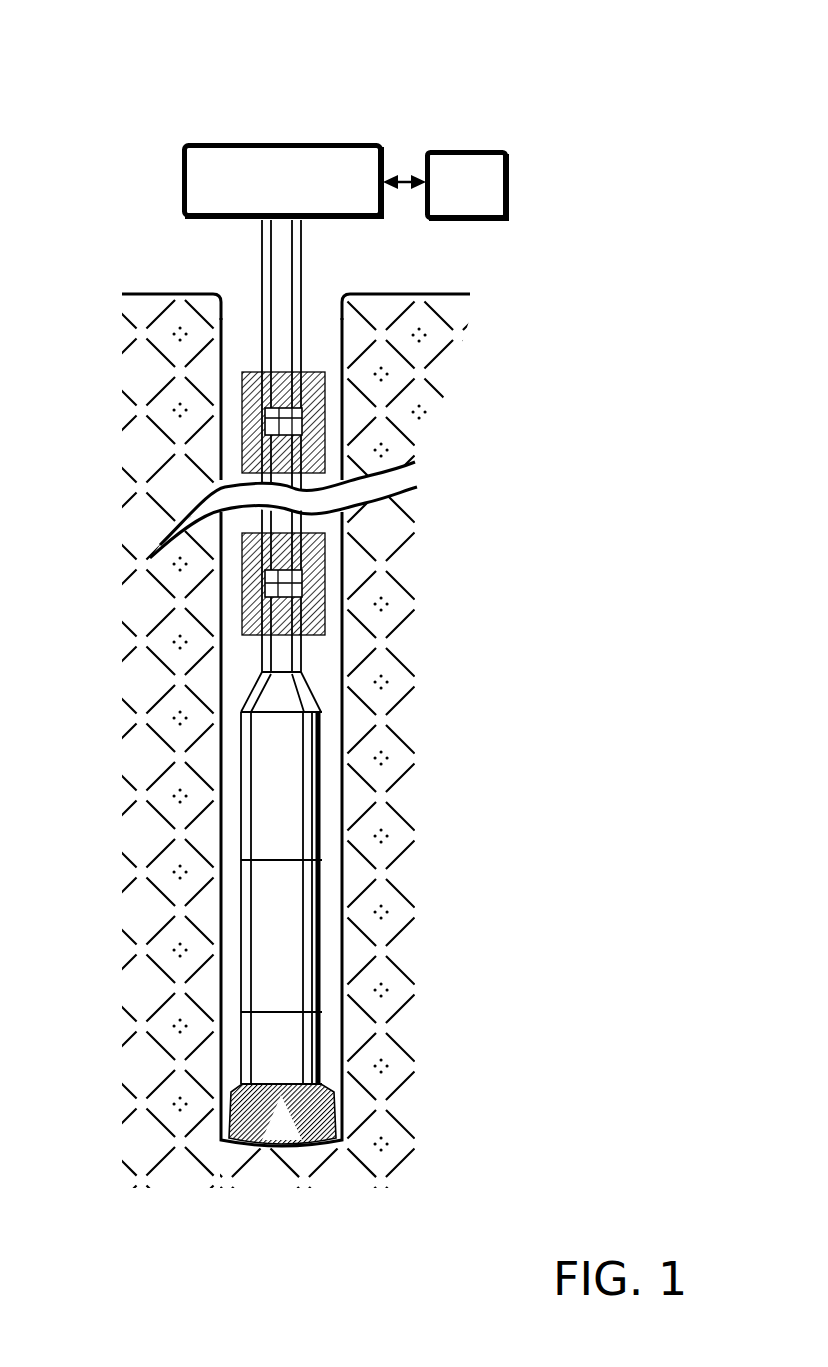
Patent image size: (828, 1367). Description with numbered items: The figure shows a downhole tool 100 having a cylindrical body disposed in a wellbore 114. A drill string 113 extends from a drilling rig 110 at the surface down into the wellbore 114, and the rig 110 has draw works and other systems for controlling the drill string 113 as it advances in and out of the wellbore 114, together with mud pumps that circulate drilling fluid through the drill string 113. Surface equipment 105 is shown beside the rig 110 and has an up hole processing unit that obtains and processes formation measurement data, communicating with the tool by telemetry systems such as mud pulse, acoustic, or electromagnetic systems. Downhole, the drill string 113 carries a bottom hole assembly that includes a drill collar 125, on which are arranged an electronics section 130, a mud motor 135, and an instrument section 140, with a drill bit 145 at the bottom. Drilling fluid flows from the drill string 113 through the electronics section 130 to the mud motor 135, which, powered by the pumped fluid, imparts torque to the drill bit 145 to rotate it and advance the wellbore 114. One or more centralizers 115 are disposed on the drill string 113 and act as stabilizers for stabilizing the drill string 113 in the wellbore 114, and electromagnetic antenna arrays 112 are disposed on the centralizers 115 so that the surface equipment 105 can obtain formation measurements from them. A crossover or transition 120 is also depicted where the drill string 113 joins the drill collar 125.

The downhole tool 100 is at (588, 77).
The surface equipment 105 is at (508, 180).
The drilling rig 110 is at (228, 142).
The electromagnetic antenna array 112 is at (283, 423).
The drill string 113 is at (268, 322).
The wellbore 114 is at (347, 321).
The centralizer 115 is at (262, 450).
The crossover sub 120 is at (250, 690).
The drill collar 125 is at (347, 772).
The electronics section 130 is at (245, 807).
The mud motor 135 is at (322, 940).
The instrument section 140 is at (243, 1040).
The drill bit 145 is at (337, 1088).